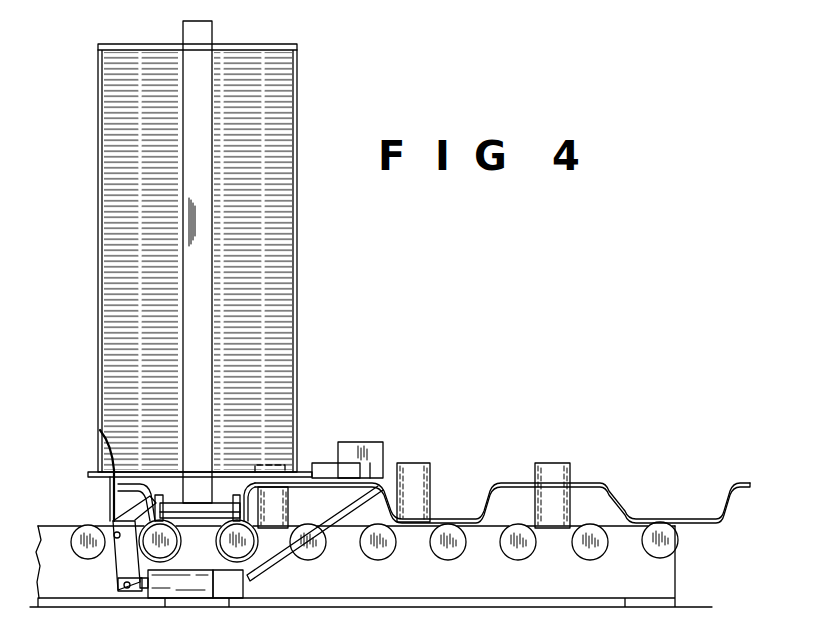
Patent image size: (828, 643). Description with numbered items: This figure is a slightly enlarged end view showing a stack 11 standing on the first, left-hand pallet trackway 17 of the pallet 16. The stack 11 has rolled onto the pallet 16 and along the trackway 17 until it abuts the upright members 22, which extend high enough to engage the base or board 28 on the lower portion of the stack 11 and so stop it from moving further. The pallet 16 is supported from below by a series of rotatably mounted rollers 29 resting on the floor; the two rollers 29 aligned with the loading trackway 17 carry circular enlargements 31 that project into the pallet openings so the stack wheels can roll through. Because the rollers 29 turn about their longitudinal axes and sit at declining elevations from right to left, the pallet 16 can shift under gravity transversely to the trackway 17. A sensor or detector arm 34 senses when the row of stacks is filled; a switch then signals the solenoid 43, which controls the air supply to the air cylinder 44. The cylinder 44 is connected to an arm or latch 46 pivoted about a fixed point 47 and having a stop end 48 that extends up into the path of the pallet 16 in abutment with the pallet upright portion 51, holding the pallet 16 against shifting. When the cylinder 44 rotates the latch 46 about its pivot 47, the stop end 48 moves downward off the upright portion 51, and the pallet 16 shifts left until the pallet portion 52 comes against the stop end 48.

The stack 11 is at (296, 328).
The pallet 16 is at (500, 482).
The pallet trackway 17 is at (246, 500).
The upright members 22 is at (108, 500).
The base or board 28 is at (305, 467).
The rollers 29 is at (83, 553).
The circular enlargements 31 is at (258, 562).
The sensor or detector arm 34 is at (325, 465).
The solenoid 43 is at (232, 590).
The air cylinder 44 is at (163, 585).
The arm or latch 46 is at (110, 570).
The fixed pivot point 47 is at (105, 524).
The stop end 48 is at (120, 498).
The upright portion of the pallet 51 is at (100, 430).
The pallet portion 52 is at (385, 487).